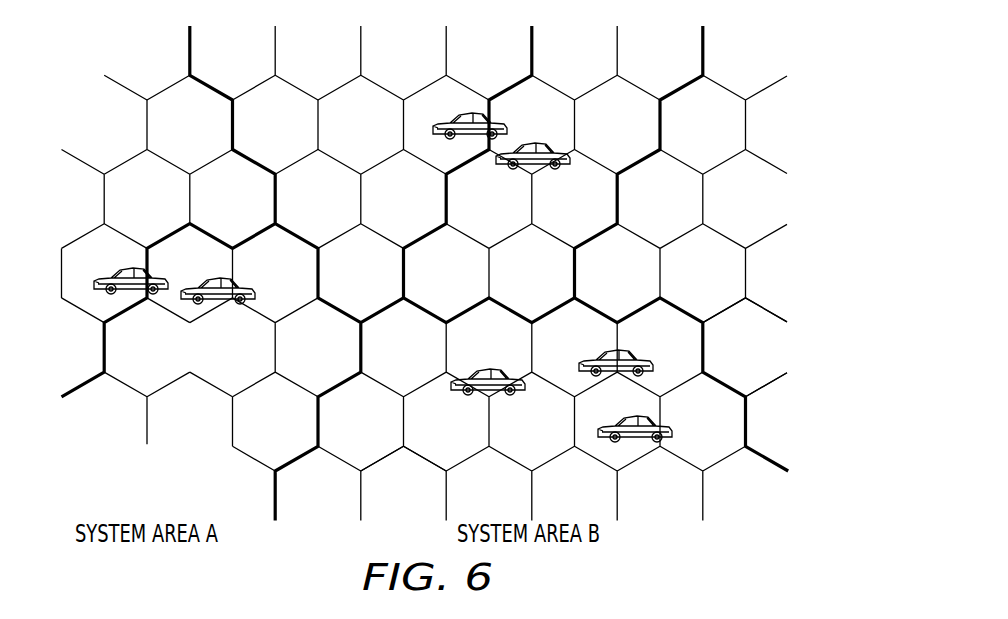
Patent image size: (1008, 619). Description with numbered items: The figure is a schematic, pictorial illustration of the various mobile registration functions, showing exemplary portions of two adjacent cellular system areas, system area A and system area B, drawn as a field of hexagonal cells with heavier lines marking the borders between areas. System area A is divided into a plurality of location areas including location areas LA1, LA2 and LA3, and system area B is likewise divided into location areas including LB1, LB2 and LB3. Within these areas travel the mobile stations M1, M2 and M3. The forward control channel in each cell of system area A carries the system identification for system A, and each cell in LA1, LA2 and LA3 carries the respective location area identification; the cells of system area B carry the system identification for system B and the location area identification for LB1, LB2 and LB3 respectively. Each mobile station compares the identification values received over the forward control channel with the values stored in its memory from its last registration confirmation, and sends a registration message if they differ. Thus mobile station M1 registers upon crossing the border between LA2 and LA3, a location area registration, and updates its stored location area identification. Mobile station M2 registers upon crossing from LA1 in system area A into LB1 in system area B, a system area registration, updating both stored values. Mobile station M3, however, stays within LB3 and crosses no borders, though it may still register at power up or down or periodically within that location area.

The mobile station M1 is at (169, 277).
The mobile station M2 is at (495, 133).
The mobile station M3 is at (561, 389).
The location area LA1 is at (318, 63).
The location area LA2 is at (105, 137).
The location area LA3 is at (190, 417).
The location area LB1 is at (660, 63).
The location area LB2 is at (751, 347).
The location area LB3 is at (403, 483).